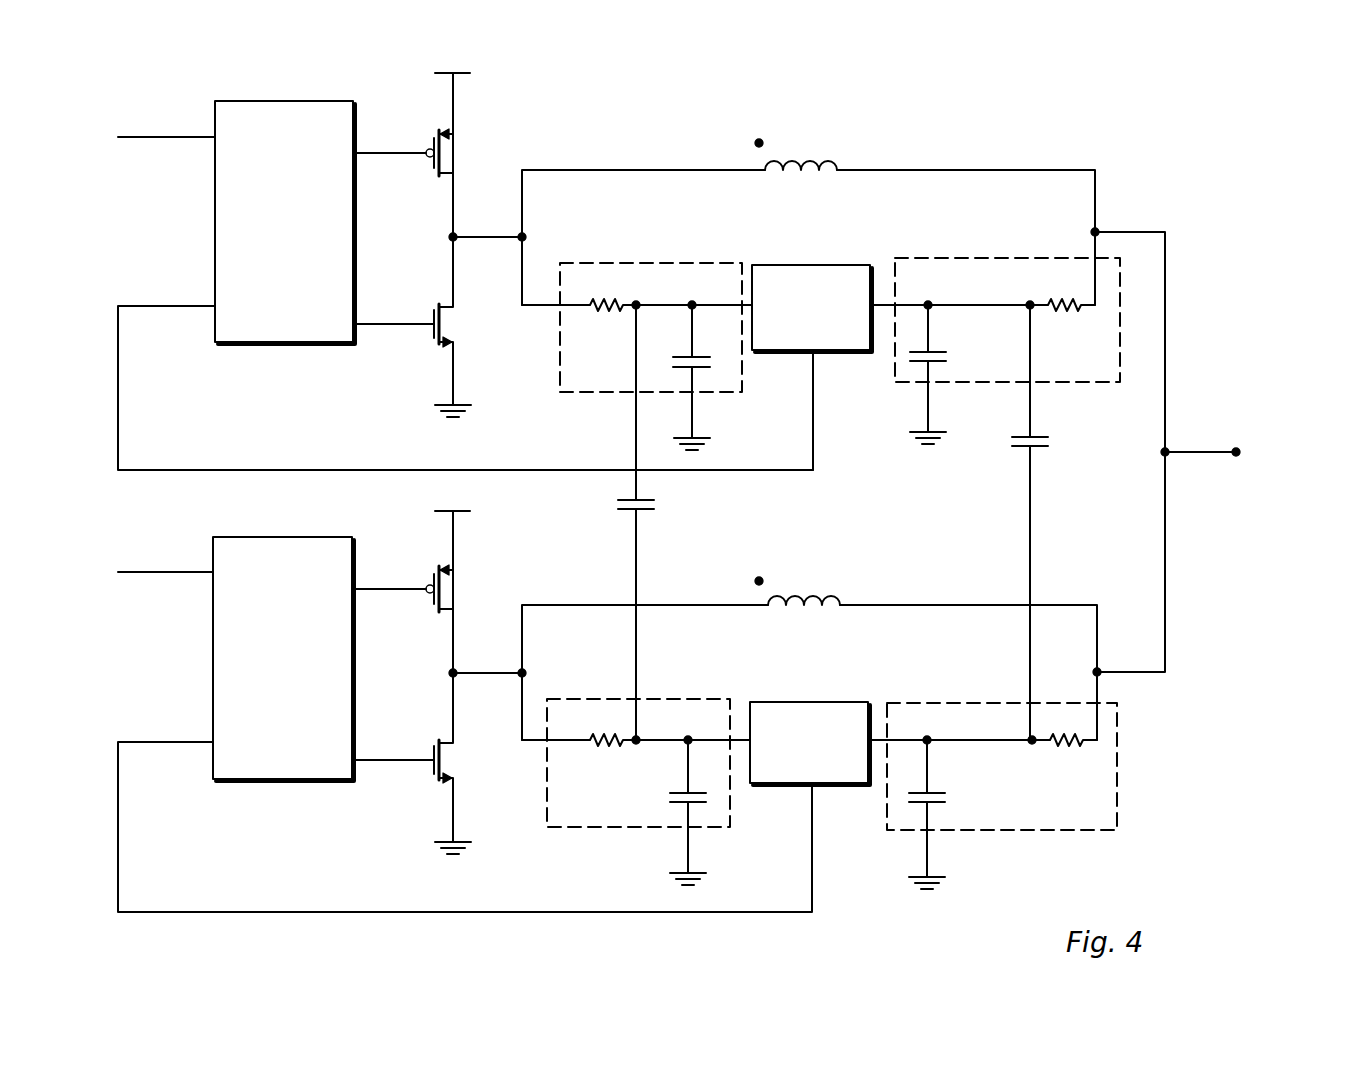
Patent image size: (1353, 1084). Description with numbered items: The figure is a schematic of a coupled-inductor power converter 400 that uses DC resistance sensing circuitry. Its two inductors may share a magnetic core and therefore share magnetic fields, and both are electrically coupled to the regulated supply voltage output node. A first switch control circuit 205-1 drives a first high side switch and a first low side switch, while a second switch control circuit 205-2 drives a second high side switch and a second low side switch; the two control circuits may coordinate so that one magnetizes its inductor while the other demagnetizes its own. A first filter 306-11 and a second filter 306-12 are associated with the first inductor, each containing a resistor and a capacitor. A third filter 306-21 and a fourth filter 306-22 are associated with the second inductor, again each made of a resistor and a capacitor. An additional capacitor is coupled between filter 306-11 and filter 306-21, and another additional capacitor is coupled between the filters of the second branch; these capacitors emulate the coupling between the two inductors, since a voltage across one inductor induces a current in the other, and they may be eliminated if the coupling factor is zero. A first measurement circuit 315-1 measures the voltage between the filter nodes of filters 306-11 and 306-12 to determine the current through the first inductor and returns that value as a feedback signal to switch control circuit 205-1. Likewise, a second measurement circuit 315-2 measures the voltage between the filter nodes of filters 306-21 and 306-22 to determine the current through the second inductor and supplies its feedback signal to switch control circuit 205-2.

The coupled-inductor power converter 400 is at (933, 73).
The switch control circuit 205-1 is at (285, 222).
The switch control circuit 205-2 is at (283, 659).
The filter 306-11 is at (608, 260).
The filter 306-12 is at (928, 257).
The filter 306-21 is at (630, 834).
The filter 306-22 is at (1003, 697).
The measurement circuit 315-1 is at (812, 308).
The measurement circuit 315-2 is at (810, 743).